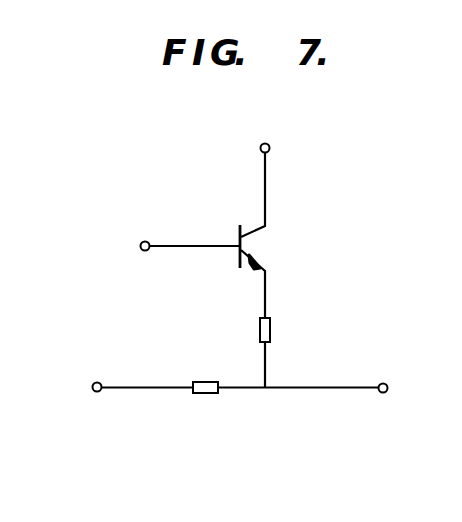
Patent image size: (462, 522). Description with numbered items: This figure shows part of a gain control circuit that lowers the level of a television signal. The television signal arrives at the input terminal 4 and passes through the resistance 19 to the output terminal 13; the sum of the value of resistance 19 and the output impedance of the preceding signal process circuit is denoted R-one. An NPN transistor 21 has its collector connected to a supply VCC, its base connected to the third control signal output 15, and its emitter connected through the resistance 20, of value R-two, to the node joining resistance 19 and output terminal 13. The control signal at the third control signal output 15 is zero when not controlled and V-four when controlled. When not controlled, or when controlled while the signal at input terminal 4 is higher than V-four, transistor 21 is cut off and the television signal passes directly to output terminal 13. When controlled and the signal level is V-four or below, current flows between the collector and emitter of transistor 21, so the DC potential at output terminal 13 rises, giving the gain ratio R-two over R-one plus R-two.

The supply voltage terminal VCC is at (268, 145).
The NPN transistor 21 is at (258, 250).
The third control signal output 15 is at (144, 251).
The resistance 20 is at (271, 330).
The first signal output 4 is at (95, 392).
The resistance 19 is at (205, 394).
The signal output 13 is at (386, 384).